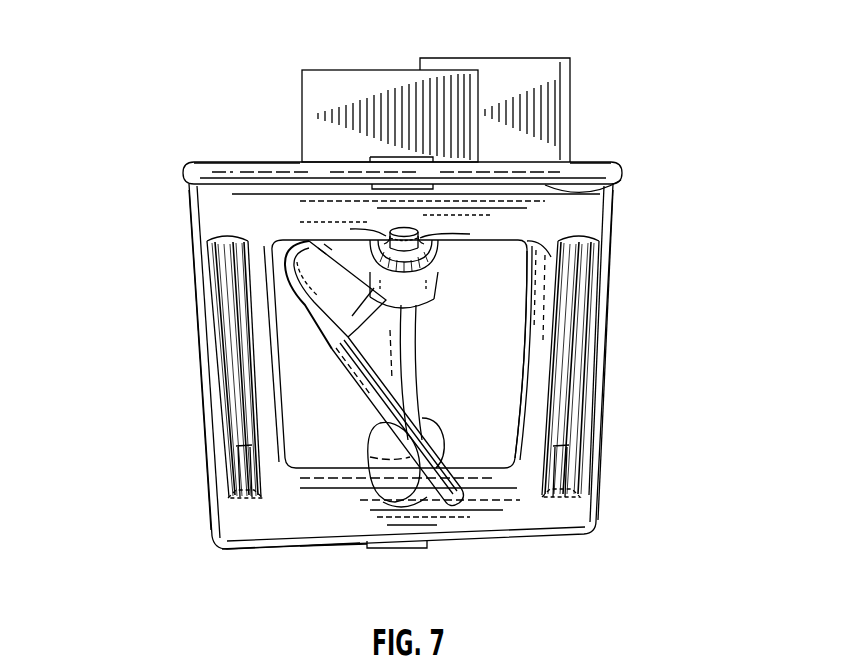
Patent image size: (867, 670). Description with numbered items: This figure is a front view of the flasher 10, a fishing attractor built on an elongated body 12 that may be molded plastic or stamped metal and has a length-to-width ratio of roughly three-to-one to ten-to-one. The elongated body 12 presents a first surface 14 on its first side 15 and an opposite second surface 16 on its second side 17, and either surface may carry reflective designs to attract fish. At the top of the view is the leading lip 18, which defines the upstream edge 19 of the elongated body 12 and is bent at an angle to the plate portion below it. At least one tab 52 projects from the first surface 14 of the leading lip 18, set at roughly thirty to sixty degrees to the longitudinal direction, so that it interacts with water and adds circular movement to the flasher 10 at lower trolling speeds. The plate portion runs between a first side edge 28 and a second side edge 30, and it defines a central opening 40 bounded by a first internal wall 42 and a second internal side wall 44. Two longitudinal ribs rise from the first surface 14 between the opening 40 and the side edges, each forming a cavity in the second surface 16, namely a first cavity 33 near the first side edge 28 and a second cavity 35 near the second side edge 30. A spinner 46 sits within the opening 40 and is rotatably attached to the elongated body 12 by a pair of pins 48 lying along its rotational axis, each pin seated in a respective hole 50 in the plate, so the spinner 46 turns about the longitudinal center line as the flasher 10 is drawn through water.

The flasher 10 is at (122, 104).
The elongated body 12 is at (594, 216).
The first surface 14 is at (225, 164).
The first side 15 is at (262, 160).
The second surface 16 is at (272, 522).
The second side 17 is at (306, 549).
The leading lip 18 is at (597, 165).
The upstream edge 19 is at (612, 200).
The first side edge 28 is at (191, 258).
The second side edge 30 is at (608, 313).
The first cavity 33 is at (236, 344).
The second cavity 35 is at (556, 338).
The opening 40 is at (506, 372).
The first internal wall 42 is at (297, 346).
The second internal side wall 44 is at (505, 436).
The spinner 46 is at (402, 338).
The pins 48 is at (387, 238).
The hole 50 is at (425, 224).
The tab 52 is at (362, 78).